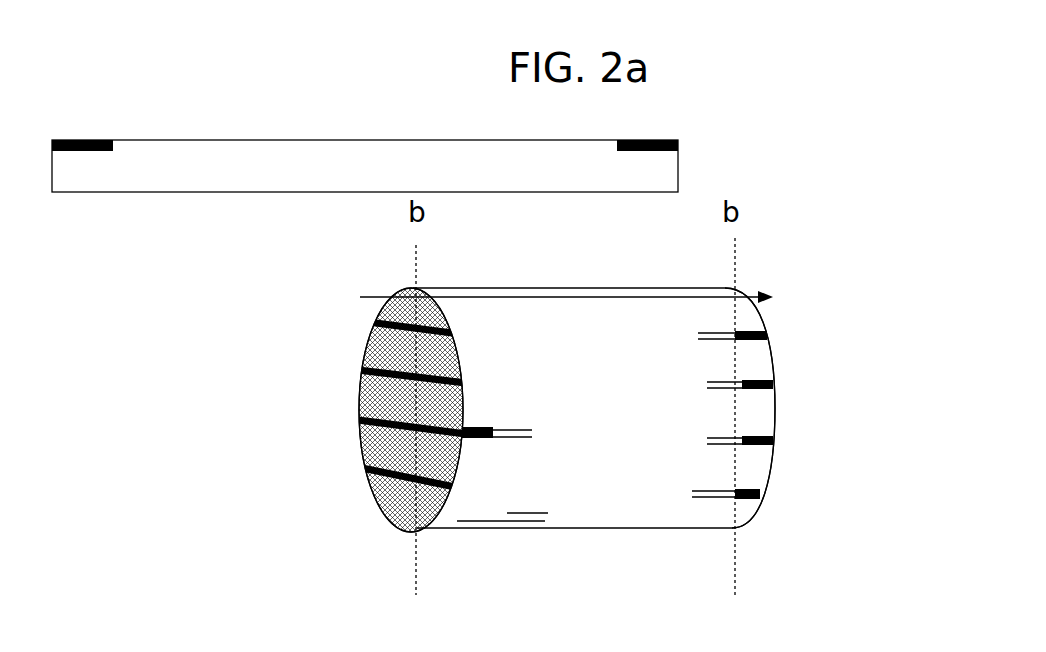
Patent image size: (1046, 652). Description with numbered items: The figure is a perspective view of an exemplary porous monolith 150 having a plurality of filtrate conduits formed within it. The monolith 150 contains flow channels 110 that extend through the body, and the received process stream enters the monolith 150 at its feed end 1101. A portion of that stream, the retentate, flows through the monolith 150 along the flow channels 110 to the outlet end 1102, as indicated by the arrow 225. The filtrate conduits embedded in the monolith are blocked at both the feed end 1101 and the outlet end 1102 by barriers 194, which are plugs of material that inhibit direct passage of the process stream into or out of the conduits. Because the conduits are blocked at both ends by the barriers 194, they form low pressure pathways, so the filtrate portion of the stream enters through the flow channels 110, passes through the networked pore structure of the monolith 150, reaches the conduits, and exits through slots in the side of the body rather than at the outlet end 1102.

The monolith 150 is at (662, 275).
The arrow 225 is at (382, 296).
The flow channels 110 is at (383, 362).
The barriers 194 is at (366, 420).
The feed end 1101 is at (393, 488).
The outlet end 1102 is at (750, 511).